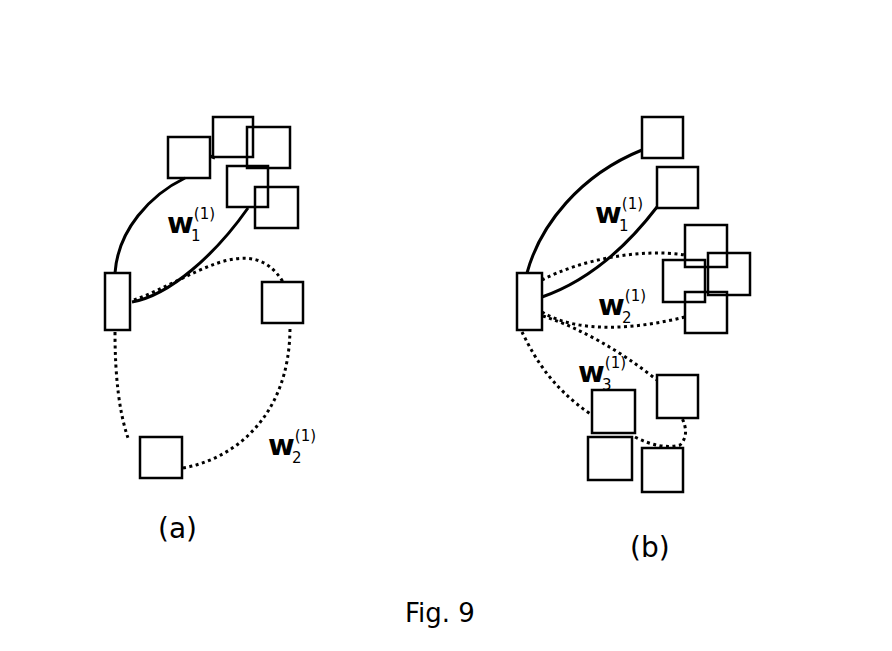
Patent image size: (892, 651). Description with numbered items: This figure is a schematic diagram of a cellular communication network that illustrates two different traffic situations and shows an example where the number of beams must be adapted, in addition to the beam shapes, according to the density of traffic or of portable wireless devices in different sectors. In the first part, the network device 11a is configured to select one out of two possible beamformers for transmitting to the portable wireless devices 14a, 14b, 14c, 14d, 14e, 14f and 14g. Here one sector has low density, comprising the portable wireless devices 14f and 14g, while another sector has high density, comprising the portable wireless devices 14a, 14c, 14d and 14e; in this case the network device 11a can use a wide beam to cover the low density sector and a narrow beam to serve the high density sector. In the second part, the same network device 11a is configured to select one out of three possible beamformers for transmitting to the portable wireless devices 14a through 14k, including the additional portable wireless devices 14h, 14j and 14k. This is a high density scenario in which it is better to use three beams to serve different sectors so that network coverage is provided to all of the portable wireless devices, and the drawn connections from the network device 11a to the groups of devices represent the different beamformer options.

The network device 11a is at (104, 305).
The portable wireless device 14a is at (187, 137).
The portable wireless device 14b is at (232, 117).
The portable wireless device 14c is at (293, 127).
The portable wireless device 14d is at (270, 178).
The portable wireless device 14e is at (298, 208).
The portable wireless device 14f is at (292, 307).
The portable wireless device 14g is at (153, 448).
The portable wireless device 14h is at (683, 473).
The portable wireless device 14j is at (592, 426).
The portable wireless device 14k is at (588, 465).